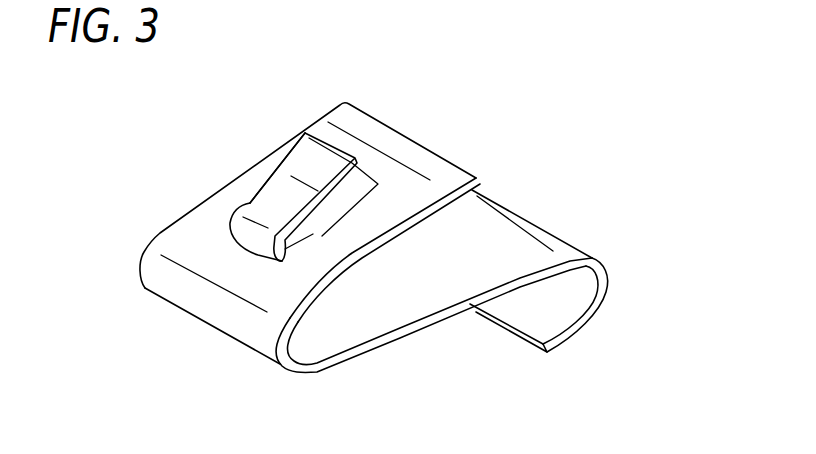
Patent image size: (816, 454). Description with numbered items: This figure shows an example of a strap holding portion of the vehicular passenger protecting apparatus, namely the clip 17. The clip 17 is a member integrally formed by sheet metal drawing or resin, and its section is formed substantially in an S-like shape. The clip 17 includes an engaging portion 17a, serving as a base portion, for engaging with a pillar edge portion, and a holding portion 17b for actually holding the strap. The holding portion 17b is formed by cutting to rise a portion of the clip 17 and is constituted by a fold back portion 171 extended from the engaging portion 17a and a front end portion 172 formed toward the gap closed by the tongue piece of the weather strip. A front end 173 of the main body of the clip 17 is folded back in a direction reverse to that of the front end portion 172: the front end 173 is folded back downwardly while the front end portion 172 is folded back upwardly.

The clip 17 is at (420, 204).
The engaging portion 17a is at (611, 267).
The holding portion 17b is at (257, 177).
The fold back portion 171 is at (248, 208).
The front end portion 172 is at (262, 177).
The front end 173 is at (453, 163).